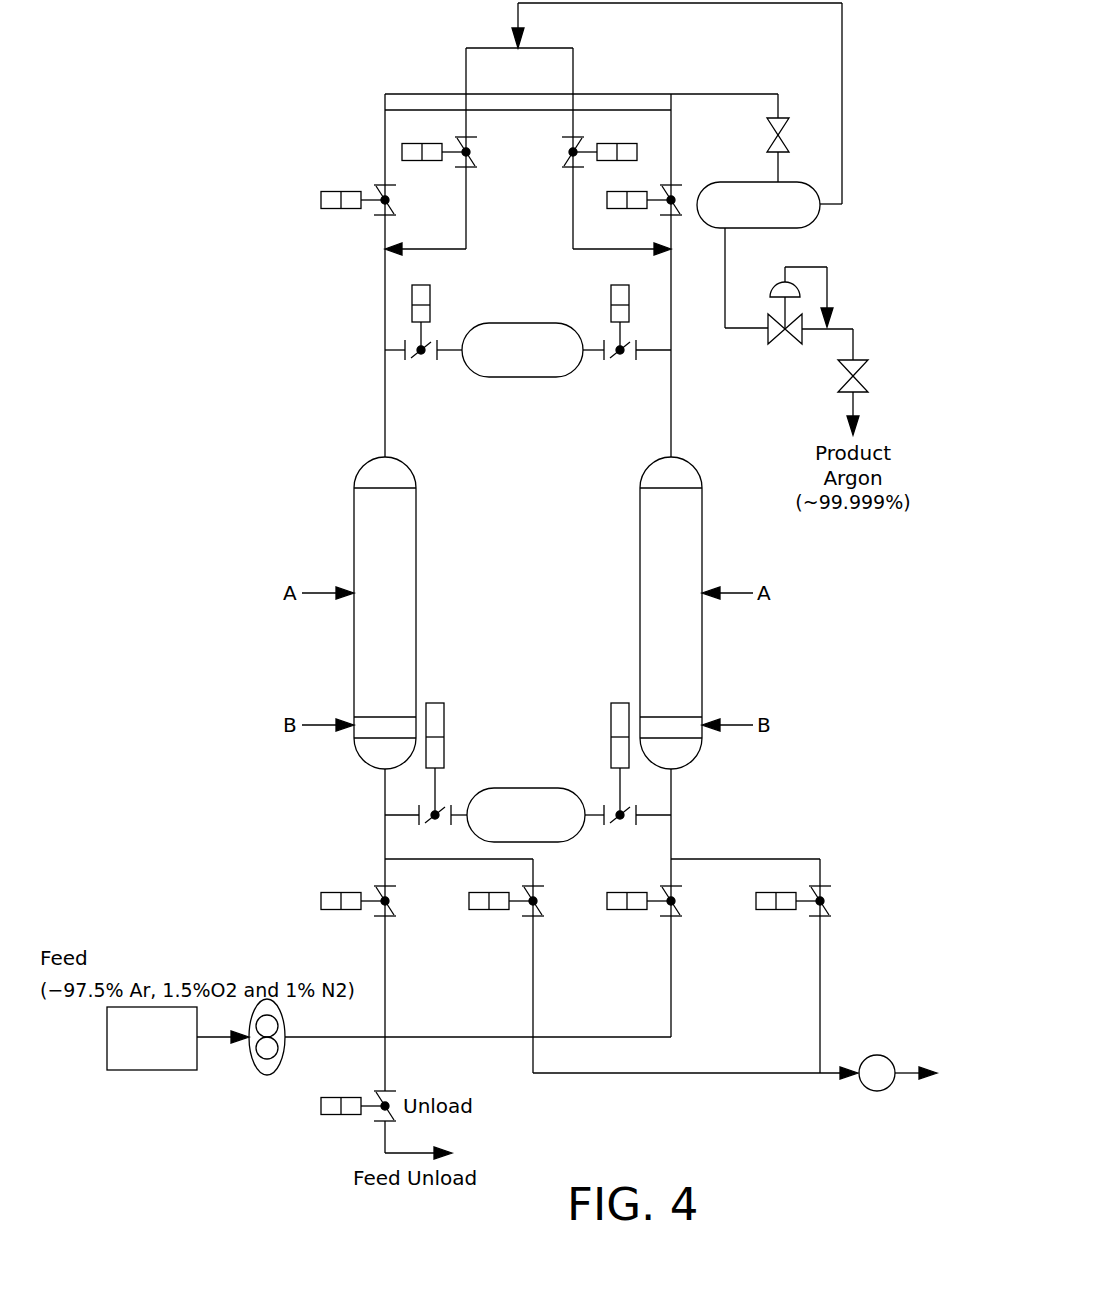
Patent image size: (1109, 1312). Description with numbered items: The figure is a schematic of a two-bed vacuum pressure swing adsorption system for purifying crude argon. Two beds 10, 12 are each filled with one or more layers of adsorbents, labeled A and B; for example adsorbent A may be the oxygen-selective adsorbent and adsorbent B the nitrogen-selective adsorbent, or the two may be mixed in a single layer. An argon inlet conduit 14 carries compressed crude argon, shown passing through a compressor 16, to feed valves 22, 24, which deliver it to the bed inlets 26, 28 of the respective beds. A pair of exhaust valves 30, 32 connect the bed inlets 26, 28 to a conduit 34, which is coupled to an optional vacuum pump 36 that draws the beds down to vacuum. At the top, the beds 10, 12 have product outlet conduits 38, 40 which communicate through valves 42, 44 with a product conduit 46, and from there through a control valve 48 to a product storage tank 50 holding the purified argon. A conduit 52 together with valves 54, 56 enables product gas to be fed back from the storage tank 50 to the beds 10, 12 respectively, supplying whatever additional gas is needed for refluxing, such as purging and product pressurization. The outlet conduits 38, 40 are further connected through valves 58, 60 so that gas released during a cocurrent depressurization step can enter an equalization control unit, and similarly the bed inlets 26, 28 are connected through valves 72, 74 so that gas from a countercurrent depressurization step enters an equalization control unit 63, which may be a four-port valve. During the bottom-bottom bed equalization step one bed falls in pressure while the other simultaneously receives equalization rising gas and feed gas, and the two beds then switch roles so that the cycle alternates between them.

The bed 10 is at (417, 545).
The bed 12 is at (639, 558).
The argon inlet conduit 14 is at (125, 1071).
The feed compressor 16 is at (265, 1077).
The feed valve 22 is at (393, 900).
The feed valve 24 is at (680, 900).
The bed inlet 26 is at (383, 790).
The bed inlet 28 is at (673, 800).
The exhaust valve 30 is at (543, 900).
The exhaust valve 32 is at (828, 900).
The conduit 34 is at (762, 1075).
The vacuum pump 36 is at (872, 1092).
The product outlet conduit 38 is at (386, 440).
The product outlet conduit 40 is at (672, 415).
The valve 42 is at (380, 205).
The valve 44 is at (666, 205).
The product conduit 46 is at (746, 93).
The control valve 48 is at (768, 128).
The product storage tank 50 is at (729, 181).
The conduit 52 is at (686, 5).
The valve 54 is at (470, 152).
The valve 56 is at (568, 152).
The valve 58 is at (422, 362).
The valve 60 is at (620, 362).
The equalization control unit 63 is at (519, 323).
The valve 72 is at (445, 805).
The valve 74 is at (621, 830).